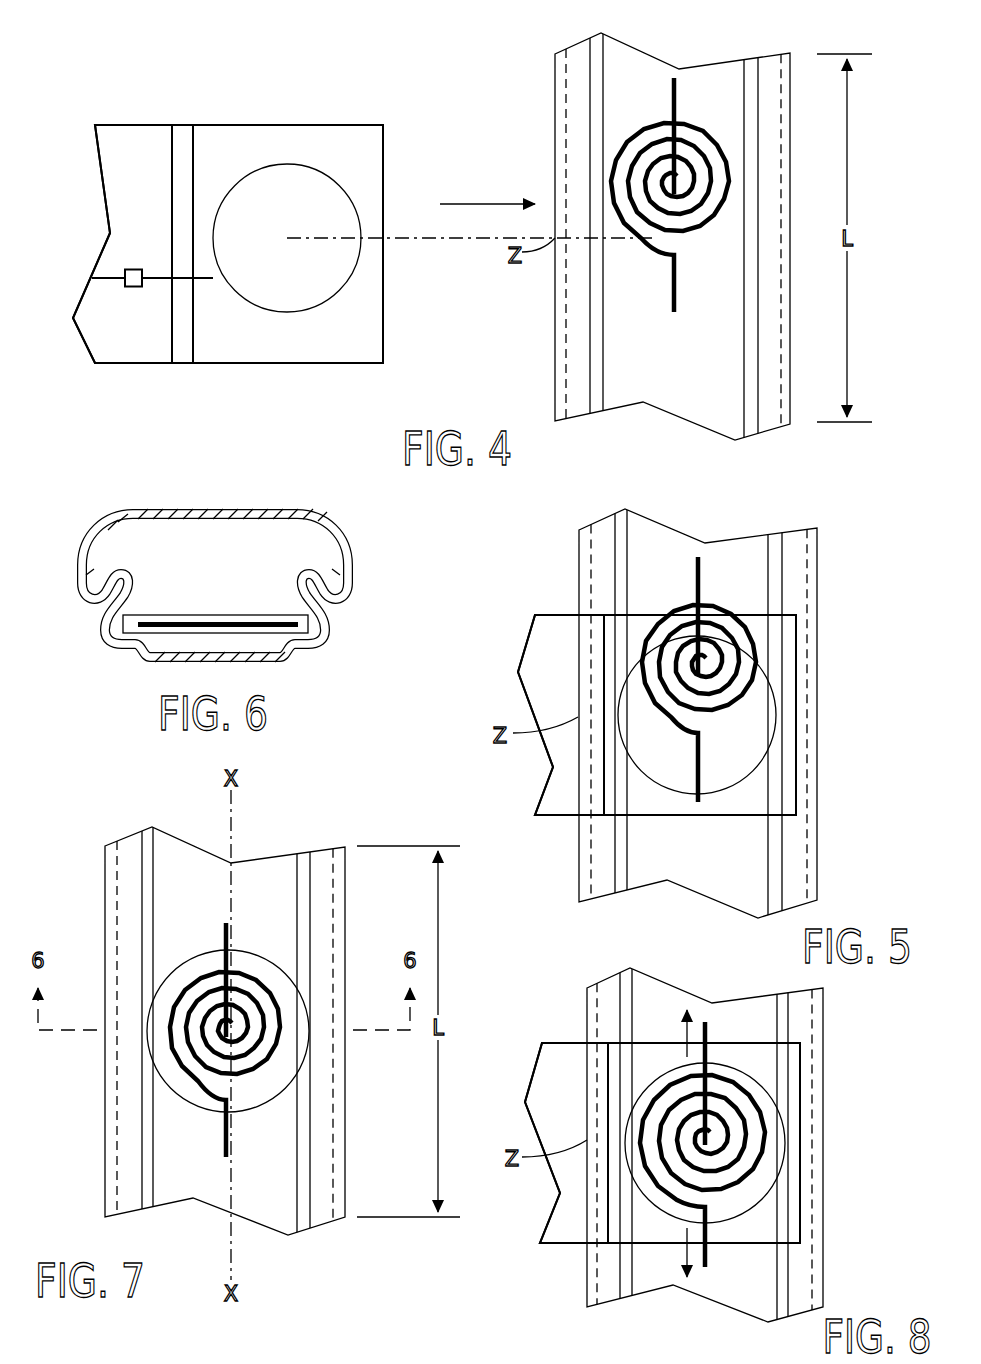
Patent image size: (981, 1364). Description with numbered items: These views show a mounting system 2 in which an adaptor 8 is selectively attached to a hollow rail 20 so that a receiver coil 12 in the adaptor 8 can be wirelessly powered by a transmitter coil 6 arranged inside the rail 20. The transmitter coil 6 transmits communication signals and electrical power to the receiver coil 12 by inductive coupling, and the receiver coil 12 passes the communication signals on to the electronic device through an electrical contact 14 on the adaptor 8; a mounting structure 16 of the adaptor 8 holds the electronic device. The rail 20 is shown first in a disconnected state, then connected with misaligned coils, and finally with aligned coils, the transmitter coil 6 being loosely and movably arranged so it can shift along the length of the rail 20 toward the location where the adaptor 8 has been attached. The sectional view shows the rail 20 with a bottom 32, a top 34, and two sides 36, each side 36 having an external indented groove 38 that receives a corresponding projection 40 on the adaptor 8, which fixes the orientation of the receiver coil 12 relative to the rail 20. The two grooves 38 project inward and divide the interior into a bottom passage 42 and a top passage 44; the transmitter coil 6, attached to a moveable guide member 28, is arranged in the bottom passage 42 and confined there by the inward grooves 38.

In FIG. 4, the mounting system 2 is at (70, 150).
In FIG. 5, the mounting system 2 is at (883, 683).
In FIG. 8, the mounting system 2 is at (877, 1156).
In FIG. 4, the transmitter coil 6 is at (699, 129).
In FIG. 6, the transmitter coil 6 is at (228, 615).
In FIG. 7, the transmitter coil 6 is at (207, 970).
In FIG. 5, the transmitter coil 6 is at (727, 600).
In FIG. 8, the transmitter coil 6 is at (748, 1183).
In FIG. 4, the adaptor 8 is at (285, 143).
In FIG. 5, the adaptor 8 is at (550, 643).
In FIG. 8, the adaptor 8 is at (563, 1057).
In FIG. 4, the receiver coil 12 is at (287, 313).
In FIG. 5, the receiver coil 12 is at (730, 785).
In FIG. 8, the receiver coil 12 is at (737, 1210).
In FIG. 4, the electrical contact 14 is at (133, 290).
In FIG. 5, the mounting structure 16 is at (850, 826).
In FIG. 8, the mounting structure 16 is at (853, 1252).
In FIG. 4, the rail 20 is at (790, 322).
In FIG. 6, the rail 20 is at (227, 564).
In FIG. 7, the rail 20 is at (320, 1145).
In FIG. 5, the rail 20 is at (817, 572).
In FIG. 8, the rail 20 is at (823, 1053).
In FIG. 6, the guide member 28 is at (120, 622).
In FIG. 7, the guide member 28 is at (175, 965).
In FIG. 6, the bottom 32 is at (262, 665).
In FIG. 6, the top 34 is at (227, 564).
In FIG. 6, the side 36 is at (227, 603).
In FIG. 6, the groove 38 is at (214, 603).
In FIG. 4, the projection 40 is at (183, 178).
In FIG. 6, the bottom passage 42 is at (178, 640).
In FIG. 6, the top passage 44 is at (160, 541).